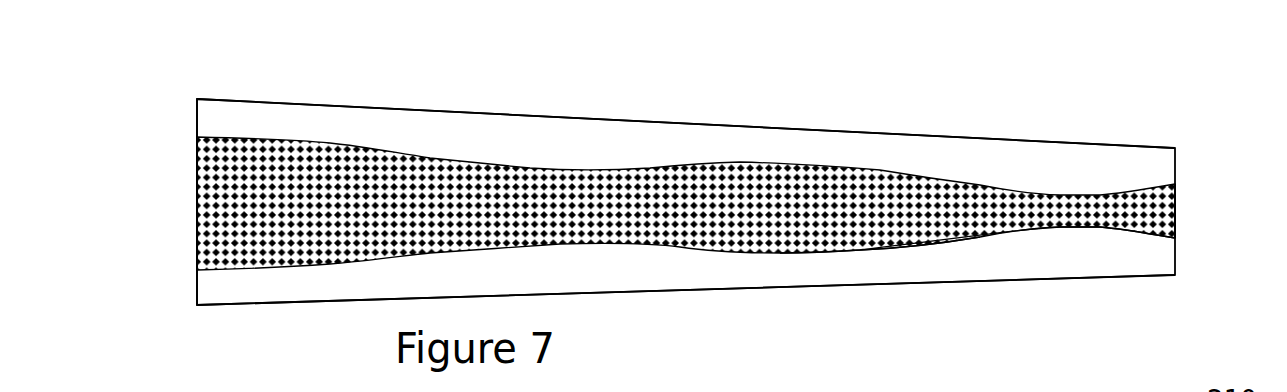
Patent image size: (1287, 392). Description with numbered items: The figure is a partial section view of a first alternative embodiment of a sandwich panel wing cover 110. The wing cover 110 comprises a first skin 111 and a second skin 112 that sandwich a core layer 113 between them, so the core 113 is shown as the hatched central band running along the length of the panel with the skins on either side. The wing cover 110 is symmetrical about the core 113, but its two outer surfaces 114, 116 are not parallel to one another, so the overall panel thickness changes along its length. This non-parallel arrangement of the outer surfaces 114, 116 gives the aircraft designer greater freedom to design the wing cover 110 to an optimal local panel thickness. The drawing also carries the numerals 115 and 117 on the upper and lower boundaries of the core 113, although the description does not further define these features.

The sandwich panel wing cover 110 is at (1110, 112).
The first skin 111 is at (208, 98).
The second skin 112 is at (222, 307).
The core layer 113 is at (1177, 218).
The outer surface 114 is at (1002, 132).
The core enlarged region 115 is at (692, 163).
The outer surface 116 is at (693, 293).
The core narrowed region 117 is at (1033, 228).